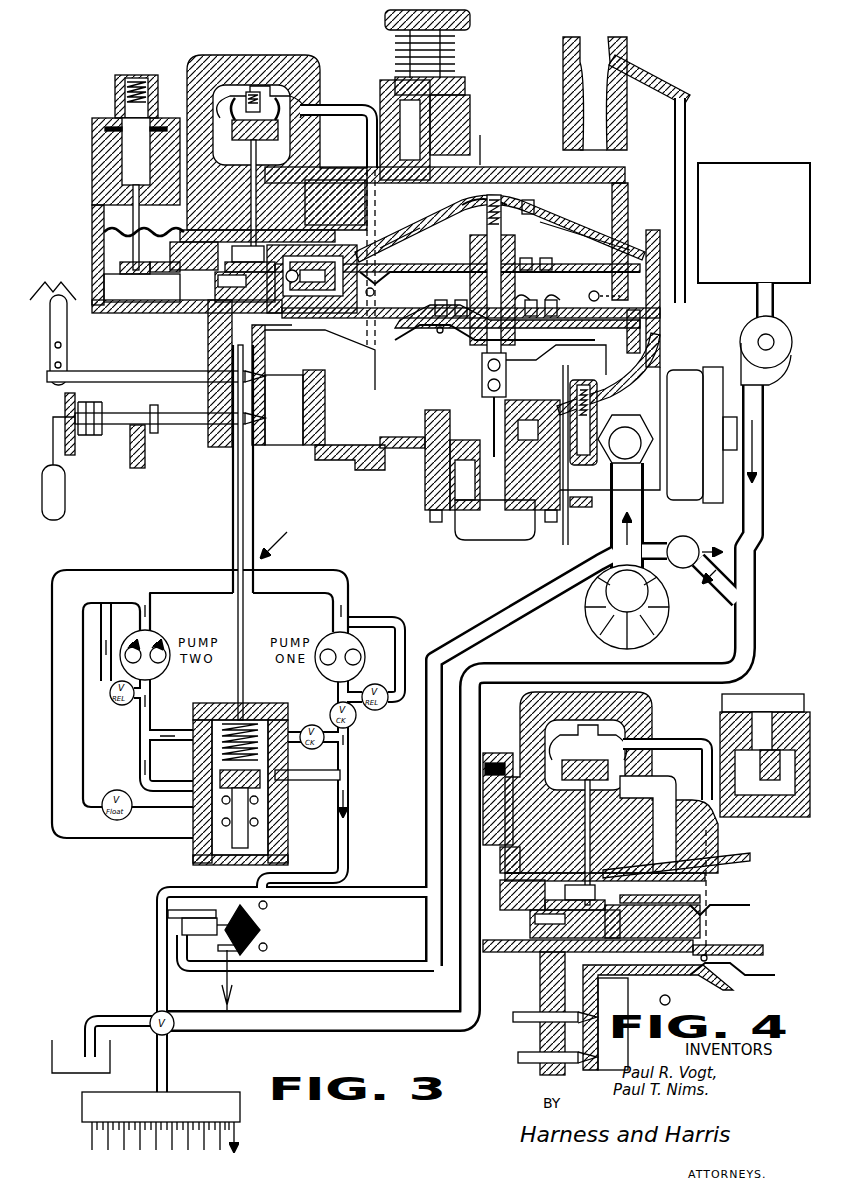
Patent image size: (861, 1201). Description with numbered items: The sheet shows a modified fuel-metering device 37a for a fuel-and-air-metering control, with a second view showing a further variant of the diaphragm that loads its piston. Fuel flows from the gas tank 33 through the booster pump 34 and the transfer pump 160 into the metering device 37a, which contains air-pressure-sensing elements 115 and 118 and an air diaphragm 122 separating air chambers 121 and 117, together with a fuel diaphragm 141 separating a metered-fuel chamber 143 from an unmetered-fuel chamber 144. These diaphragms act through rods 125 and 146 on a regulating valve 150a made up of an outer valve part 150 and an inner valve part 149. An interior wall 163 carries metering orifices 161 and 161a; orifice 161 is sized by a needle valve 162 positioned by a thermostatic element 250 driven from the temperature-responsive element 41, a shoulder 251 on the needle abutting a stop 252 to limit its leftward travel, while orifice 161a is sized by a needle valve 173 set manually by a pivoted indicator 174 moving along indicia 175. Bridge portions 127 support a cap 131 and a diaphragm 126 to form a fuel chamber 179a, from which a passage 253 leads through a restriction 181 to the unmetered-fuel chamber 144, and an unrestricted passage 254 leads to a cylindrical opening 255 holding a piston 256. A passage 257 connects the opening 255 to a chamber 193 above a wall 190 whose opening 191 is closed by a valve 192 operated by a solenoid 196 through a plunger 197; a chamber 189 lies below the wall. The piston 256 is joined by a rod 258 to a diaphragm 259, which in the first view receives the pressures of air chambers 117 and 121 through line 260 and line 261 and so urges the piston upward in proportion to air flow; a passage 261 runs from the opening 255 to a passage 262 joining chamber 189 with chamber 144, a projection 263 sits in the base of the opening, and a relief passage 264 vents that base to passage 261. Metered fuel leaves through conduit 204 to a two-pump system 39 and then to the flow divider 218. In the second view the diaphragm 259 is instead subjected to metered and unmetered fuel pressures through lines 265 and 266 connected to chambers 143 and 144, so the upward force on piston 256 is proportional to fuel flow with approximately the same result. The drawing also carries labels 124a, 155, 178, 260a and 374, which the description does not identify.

In FIG. 3, the gas tank 33 is at (726, 170).
In FIG. 3, the booster pump 34 is at (776, 374).
In FIG. 3, the fuel-metering device 37a is at (483, 155).
In FIG. 3, the two-pump system 39 is at (288, 536).
In FIG. 3, the temperature-responsive element 41 is at (66, 508).
In FIG. 3, the air-pressure-sensing element 115 is at (610, 40).
In FIG. 3, the air chamber 117 is at (405, 298).
In FIG. 4, the air chamber 117 is at (682, 921).
In FIG. 3, the air-pressure-sensing element 118 is at (470, 70).
In FIG. 4, the air-pressure-sensing element 118 is at (810, 704).
In FIG. 3, the air chamber 121 is at (395, 264).
In FIG. 4, the air chamber 121 is at (692, 889).
In FIG. 3, the air diaphragm 122 is at (500, 270).
In FIG. 4, the air diaphragm 122 is at (730, 901).
In FIG. 3, the chamber 124a is at (460, 300).
In FIG. 3, the rod 125 is at (518, 297).
In FIG. 3, the diaphragm 126 is at (543, 262).
In FIG. 3, the bridge portions 127 is at (382, 230).
In FIG. 4, the bridge portions 127 is at (728, 862).
In FIG. 3, the cap 131 is at (505, 202).
In FIG. 3, the fuel diaphragm 141 is at (401, 344).
In FIG. 4, the fuel diaphragm 141 is at (750, 980).
In FIG. 3, the metered-fuel chamber 143 is at (495, 328).
In FIG. 4, the metered-fuel chamber 143 is at (732, 965).
In FIG. 3, the unmetered-fuel chamber 144 is at (346, 380).
In FIG. 4, the unmetered-fuel chamber 144 is at (706, 993).
In FIG. 3, the rod 146 is at (508, 386).
In FIG. 3, the inner valve part 149 is at (510, 398).
In FIG. 3, the outer valve part 150 is at (513, 406).
In FIG. 3, the regulating valve 150a is at (475, 418).
In FIG. 3, the relief valve 155 is at (646, 538).
In FIG. 3, the transfer pump 160 is at (600, 640).
In FIG. 3, the metering orifice 161 is at (264, 419).
In FIG. 4, the metering orifice 161 is at (597, 1039).
In FIG. 3, the metering orifice 161a is at (262, 389).
In FIG. 4, the metering orifice 161a is at (597, 996).
In FIG. 3, the needle valve 162 is at (200, 428).
In FIG. 4, the needle valve 162 is at (520, 1058).
In FIG. 3, the interior wall 163 is at (267, 360).
In FIG. 4, the interior wall 163 is at (600, 992).
In FIG. 3, the needle valve 173 is at (108, 372).
In FIG. 3, the pivoted indicator 174 is at (70, 342).
In FIG. 3, the indicia 175 is at (72, 280).
In FIG. 4, the actuating rods 178 is at (528, 1012).
In FIG. 3, the chamber 179a is at (472, 202).
In FIG. 3, the restriction 181 is at (535, 205).
In FIG. 3, the chamber 189 is at (118, 313).
In FIG. 4, the chamber 189 is at (486, 953).
In FIG. 3, the wall 190 is at (120, 260).
In FIG. 3, the opening 191 is at (148, 260).
In FIG. 3, the valve 192 is at (142, 288).
In FIG. 3, the chamber 193 is at (104, 236).
In FIG. 3, the solenoid 196 is at (94, 151).
In FIG. 4, the solenoid 196 is at (495, 760).
In FIG. 3, the plunger 197 is at (115, 110).
In FIG. 3, the conduit 204 is at (250, 490).
In FIG. 3, the flow divider 218 is at (172, 1093).
In FIG. 3, the thermostatic element 250 is at (98, 438).
In FIG. 3, the shoulder 251 is at (156, 415).
In FIG. 3, the stop 252 is at (150, 447).
In FIG. 3, the passage 253 is at (630, 240).
In FIG. 3, the unrestricted passage 254 is at (445, 200).
In FIG. 4, the unrestricted passage 254 is at (755, 858).
In FIG. 3, the cylindrical opening 255 is at (254, 222).
In FIG. 3, the piston 256 is at (248, 254).
In FIG. 4, the piston 256 is at (580, 892).
In FIG. 3, the passage 257 is at (206, 234).
In FIG. 4, the passage 257 is at (532, 872).
In FIG. 3, the rod 258 is at (258, 185).
In FIG. 4, the rod 258 is at (583, 785).
In FIG. 3, the diaphragm 259 is at (260, 83).
In FIG. 4, the diaphragm 259 is at (611, 782).
In FIG. 3, the line 260 is at (344, 109).
In FIG. 3, the passage 260a is at (335, 202).
In FIG. 3, the passage 261 is at (212, 255).
In FIG. 4, the passage 261 is at (522, 895).
In FIG. 3, the passage 262 is at (274, 313).
In FIG. 4, the passage 262 is at (564, 949).
In FIG. 3, the projection 263 is at (225, 282).
In FIG. 4, the projection 263 is at (545, 916).
In FIG. 3, the relief passage 264 is at (215, 288).
In FIG. 4, the relief passage 264 is at (535, 923).
In FIG. 4, the line 265 is at (658, 744).
In FIG. 4, the line 266 is at (653, 793).
In FIG. 4, the passage 374 is at (802, 754).